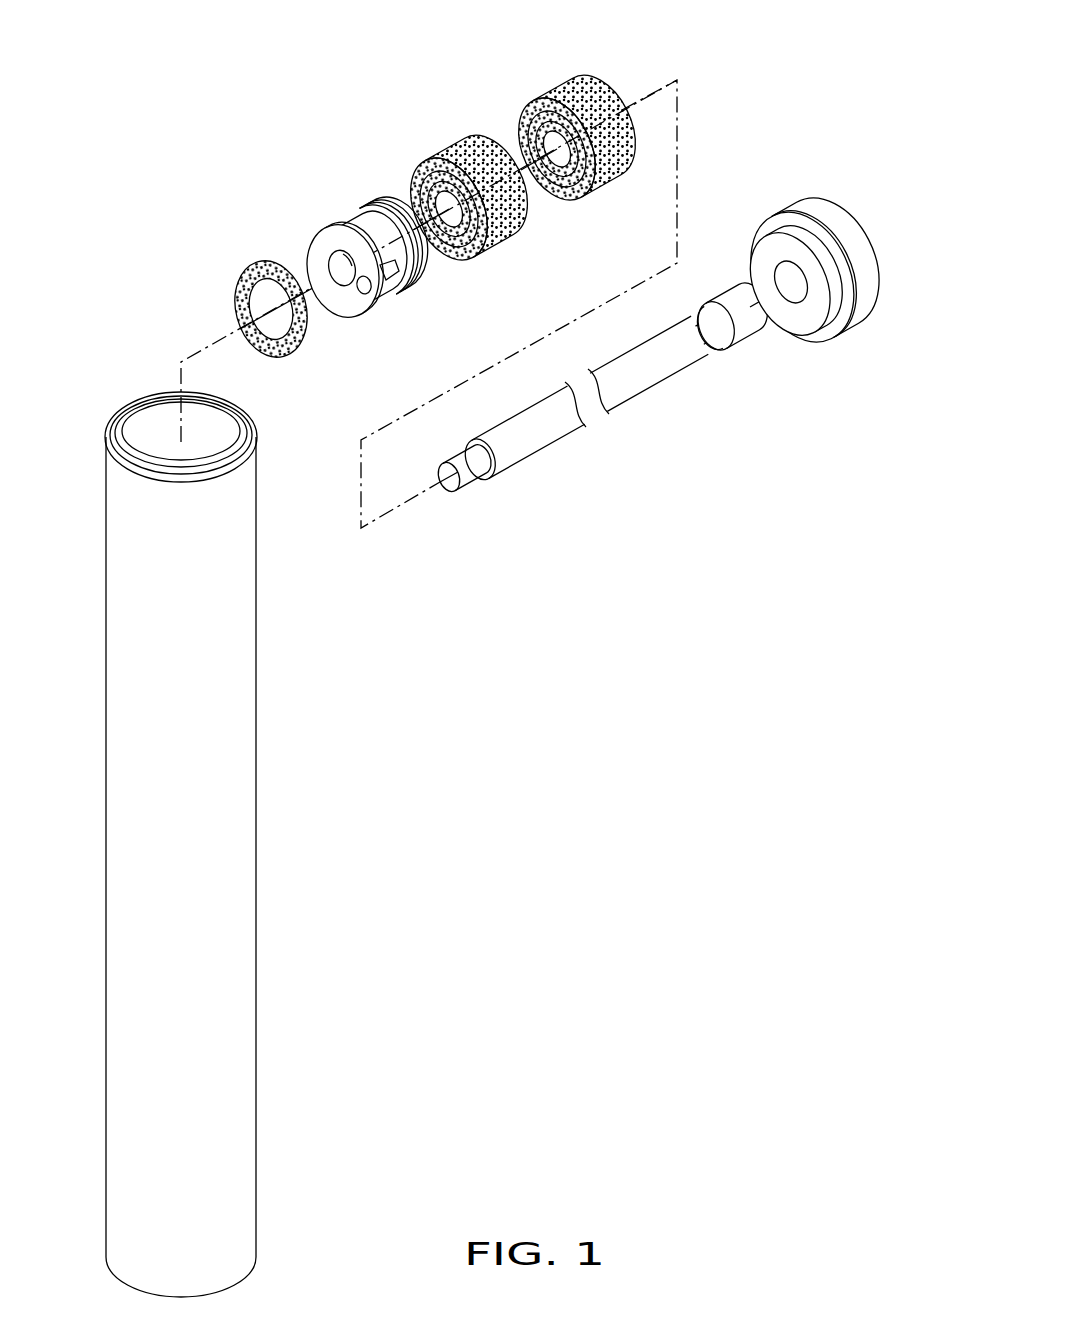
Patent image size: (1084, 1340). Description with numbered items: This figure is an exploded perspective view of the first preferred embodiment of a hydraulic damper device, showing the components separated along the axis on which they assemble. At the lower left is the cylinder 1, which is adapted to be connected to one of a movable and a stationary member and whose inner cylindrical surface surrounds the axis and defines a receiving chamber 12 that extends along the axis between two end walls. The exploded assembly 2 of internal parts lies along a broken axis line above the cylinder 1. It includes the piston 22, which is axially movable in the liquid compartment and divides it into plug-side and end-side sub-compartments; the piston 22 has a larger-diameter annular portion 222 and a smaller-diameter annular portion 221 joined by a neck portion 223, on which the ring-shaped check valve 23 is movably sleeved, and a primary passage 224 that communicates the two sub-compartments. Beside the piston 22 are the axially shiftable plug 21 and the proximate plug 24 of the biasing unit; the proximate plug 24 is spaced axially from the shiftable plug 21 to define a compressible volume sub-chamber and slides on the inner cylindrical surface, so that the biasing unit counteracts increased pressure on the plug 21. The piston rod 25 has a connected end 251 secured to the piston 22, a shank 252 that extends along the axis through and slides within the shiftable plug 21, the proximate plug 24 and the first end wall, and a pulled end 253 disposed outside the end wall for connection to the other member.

The cylinder 1 is at (149, 828).
The receiving chamber 12 is at (147, 430).
The roller assembly 2 is at (523, 293).
The axially shiftable plug 21 is at (466, 155).
The piston 22 is at (369, 253).
The smaller-diameter annular portion 221 is at (358, 316).
The larger-diameter annular portion 222 is at (415, 258).
The neck portion 223 is at (363, 234).
The primary passage 224 is at (366, 292).
The ring-shaped check valve 23 is at (245, 280).
The proximate plug 24 is at (565, 95).
The piston rod 25 is at (656, 391).
The connected end 251 is at (478, 484).
The shank 252 is at (655, 370).
The pulled end 253 is at (742, 334).